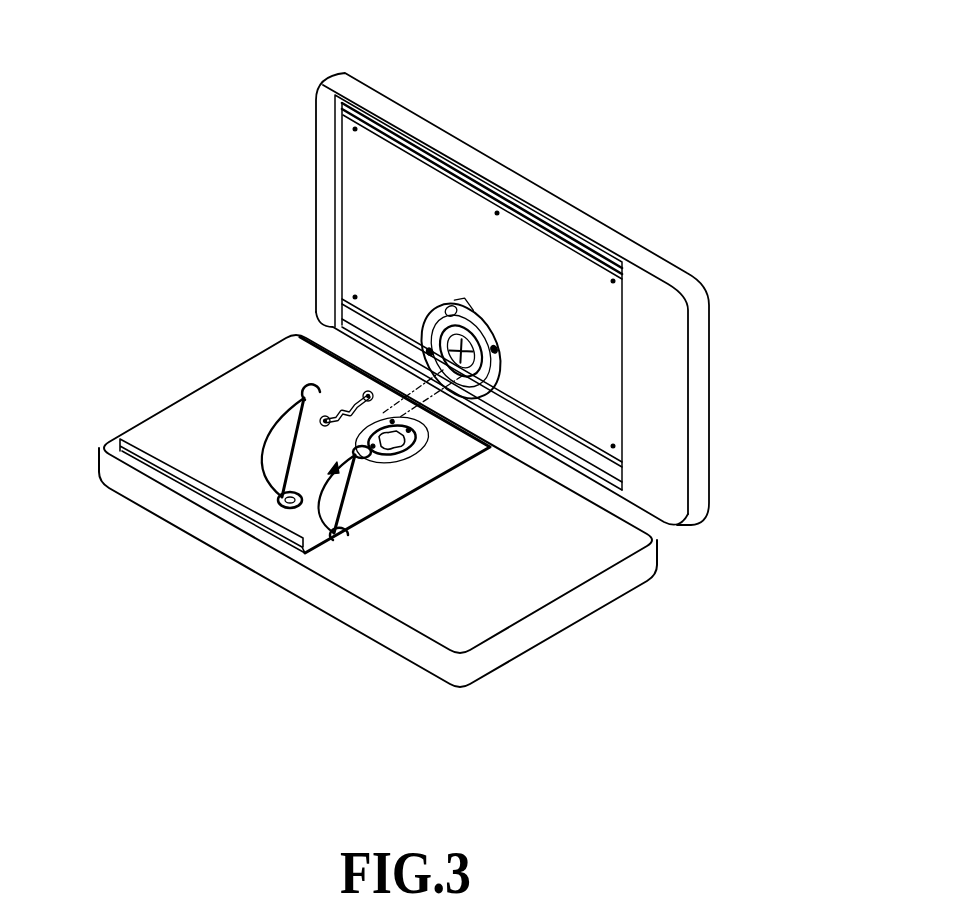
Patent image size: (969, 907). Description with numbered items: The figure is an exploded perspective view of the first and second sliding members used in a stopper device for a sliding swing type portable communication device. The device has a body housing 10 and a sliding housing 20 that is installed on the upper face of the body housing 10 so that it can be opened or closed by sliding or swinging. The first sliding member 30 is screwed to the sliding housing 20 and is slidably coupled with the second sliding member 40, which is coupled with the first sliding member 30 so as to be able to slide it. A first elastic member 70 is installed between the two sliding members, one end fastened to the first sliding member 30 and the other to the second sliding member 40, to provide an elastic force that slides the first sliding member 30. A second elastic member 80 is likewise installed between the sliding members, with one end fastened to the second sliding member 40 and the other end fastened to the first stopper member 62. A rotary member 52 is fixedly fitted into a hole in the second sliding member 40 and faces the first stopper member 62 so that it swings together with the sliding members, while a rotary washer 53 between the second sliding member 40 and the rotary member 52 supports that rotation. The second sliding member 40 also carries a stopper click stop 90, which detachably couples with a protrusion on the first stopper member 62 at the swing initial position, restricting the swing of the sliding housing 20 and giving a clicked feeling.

The body housing 10 is at (168, 408).
The sliding housing 20 is at (322, 165).
The first sliding member 30 is at (443, 193).
The second sliding member 40 is at (188, 462).
The rotary member 52 is at (492, 393).
The rotary washer 53 is at (395, 425).
The first stopper member 62 is at (492, 384).
The first elastic member 70 is at (260, 464).
The second elastic member 80 is at (330, 545).
The stopper click stop 90 is at (353, 403).